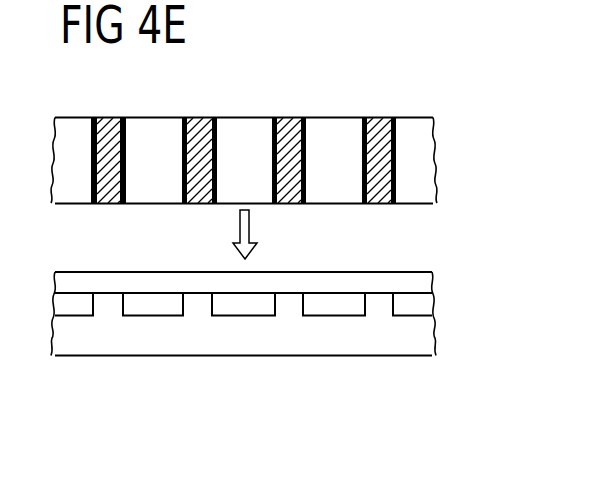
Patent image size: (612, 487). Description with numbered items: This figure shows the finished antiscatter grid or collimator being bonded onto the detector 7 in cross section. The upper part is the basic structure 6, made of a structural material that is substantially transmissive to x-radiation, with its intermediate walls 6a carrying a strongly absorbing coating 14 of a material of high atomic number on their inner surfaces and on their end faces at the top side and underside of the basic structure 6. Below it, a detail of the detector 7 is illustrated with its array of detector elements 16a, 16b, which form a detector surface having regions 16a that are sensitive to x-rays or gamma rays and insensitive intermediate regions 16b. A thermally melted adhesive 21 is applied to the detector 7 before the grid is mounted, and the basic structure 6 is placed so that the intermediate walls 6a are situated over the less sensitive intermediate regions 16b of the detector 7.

The basic structure 6 is at (426, 117).
The intermediate walls 6a is at (290, 127).
The strongly absorbing coating 14 is at (125, 125).
The detector 7 is at (425, 348).
The thermally melted adhesive 21 is at (425, 282).
The sensitive regions 16a is at (225, 302).
The insensitive intermediate regions 16b is at (288, 302).